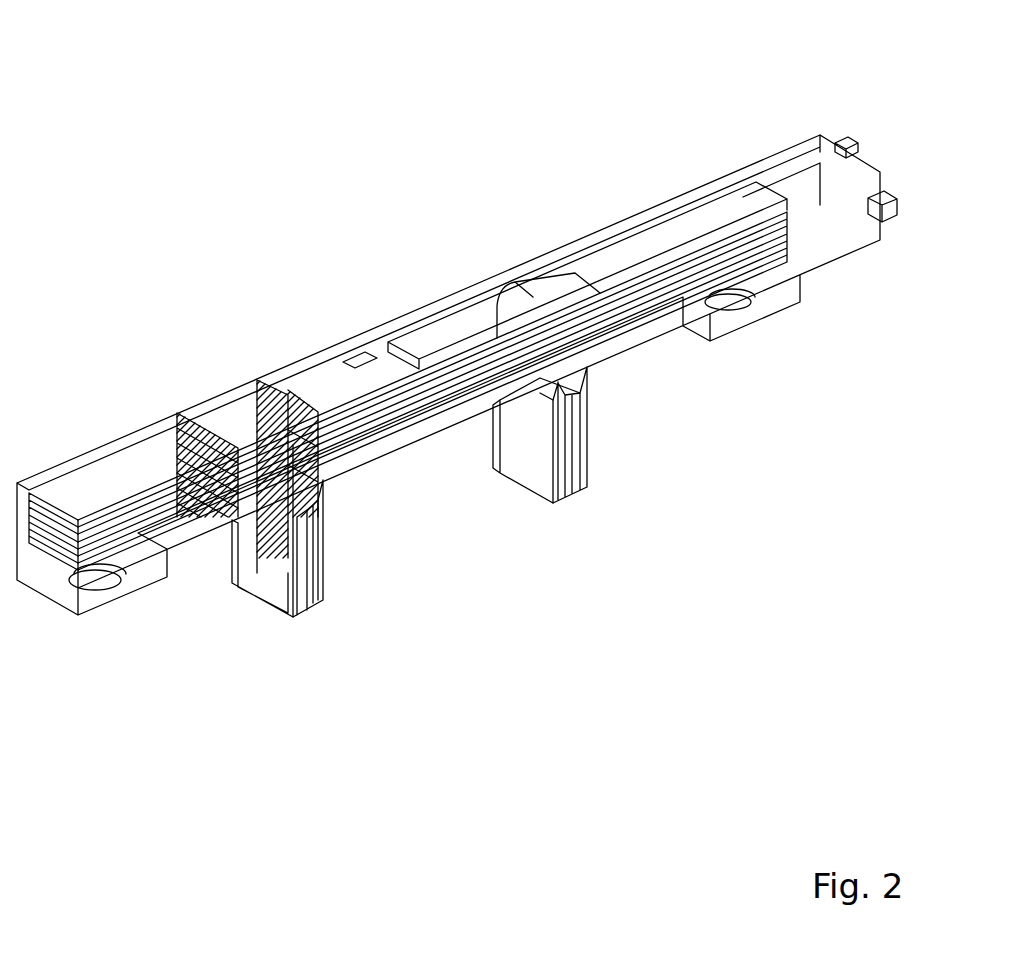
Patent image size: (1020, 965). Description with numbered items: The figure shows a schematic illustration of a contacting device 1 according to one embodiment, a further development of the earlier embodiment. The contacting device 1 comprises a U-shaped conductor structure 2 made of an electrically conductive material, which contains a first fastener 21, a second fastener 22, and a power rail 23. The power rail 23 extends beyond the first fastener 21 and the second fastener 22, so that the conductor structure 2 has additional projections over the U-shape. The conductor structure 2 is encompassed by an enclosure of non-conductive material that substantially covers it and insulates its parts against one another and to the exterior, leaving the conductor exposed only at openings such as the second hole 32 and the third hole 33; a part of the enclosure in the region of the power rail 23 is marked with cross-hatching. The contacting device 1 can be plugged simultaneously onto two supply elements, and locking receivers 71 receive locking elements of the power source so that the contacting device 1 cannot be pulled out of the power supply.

The contacting device 1 is at (245, 131).
The conductor structure 2 is at (456, 198).
The first fastener 21 is at (493, 457).
The second fastener 22 is at (232, 553).
The power rail 23 is at (428, 322).
The second hole 32 is at (308, 593).
The third hole 33 is at (633, 300).
The locking receiver 71 is at (737, 310).